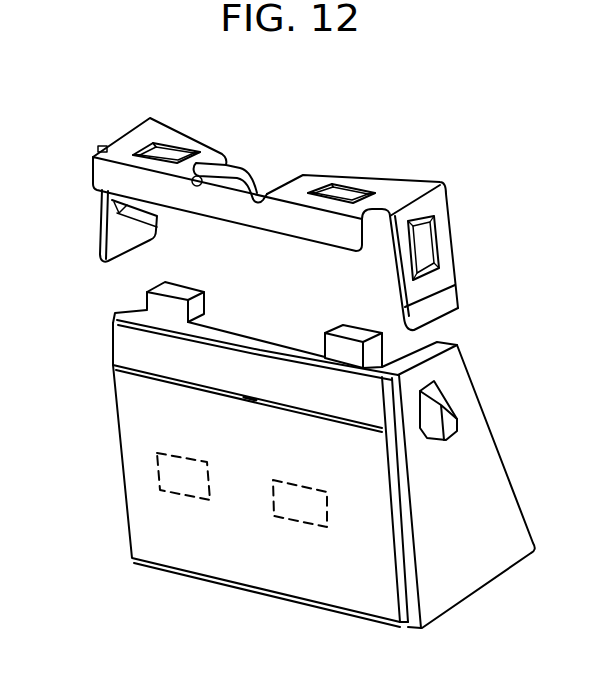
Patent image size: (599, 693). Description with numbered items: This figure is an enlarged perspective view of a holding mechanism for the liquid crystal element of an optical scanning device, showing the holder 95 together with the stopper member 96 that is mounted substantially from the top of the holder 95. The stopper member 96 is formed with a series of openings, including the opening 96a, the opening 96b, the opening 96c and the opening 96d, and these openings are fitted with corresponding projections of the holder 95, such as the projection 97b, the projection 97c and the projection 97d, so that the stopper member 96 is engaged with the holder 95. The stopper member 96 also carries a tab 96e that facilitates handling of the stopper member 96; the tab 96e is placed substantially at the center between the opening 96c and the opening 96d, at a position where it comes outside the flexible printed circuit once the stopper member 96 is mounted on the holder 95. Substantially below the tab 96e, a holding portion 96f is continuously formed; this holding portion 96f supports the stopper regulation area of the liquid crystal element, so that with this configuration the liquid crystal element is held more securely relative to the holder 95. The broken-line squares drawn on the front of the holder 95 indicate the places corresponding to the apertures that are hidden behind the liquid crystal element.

The holder 95 is at (512, 604).
The stopper member 96 is at (436, 160).
The opening 96a is at (118, 204).
The opening 96b is at (425, 243).
The opening 96c is at (176, 148).
The opening 96d is at (355, 186).
The tab 96e is at (243, 166).
The holding portion 96f is at (237, 217).
The projection 97b is at (453, 426).
The projection 97c is at (160, 305).
The projection 97d is at (352, 354).